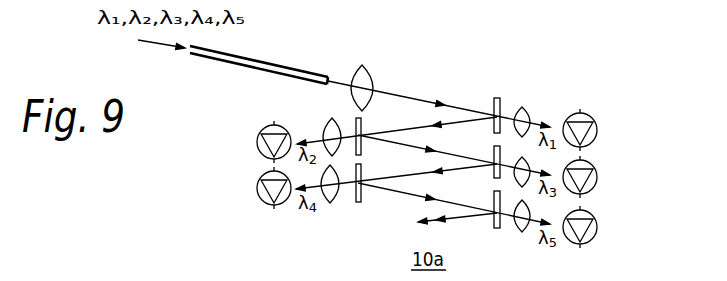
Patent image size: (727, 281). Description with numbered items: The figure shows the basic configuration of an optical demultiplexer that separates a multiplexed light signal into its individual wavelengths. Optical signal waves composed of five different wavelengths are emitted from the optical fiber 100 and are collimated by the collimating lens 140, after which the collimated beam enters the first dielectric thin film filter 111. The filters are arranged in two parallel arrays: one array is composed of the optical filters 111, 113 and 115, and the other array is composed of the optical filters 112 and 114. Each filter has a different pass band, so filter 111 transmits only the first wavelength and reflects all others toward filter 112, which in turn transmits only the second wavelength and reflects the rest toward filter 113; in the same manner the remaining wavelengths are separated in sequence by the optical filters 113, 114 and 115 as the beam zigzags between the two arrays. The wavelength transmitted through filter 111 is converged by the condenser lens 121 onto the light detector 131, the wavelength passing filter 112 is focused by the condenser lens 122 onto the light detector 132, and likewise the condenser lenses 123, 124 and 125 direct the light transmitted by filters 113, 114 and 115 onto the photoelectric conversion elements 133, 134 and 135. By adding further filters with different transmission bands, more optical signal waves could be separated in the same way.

The optical fiber 100 is at (300, 58).
The collimating lens 140 is at (372, 70).
The dielectric thin film filter 111 is at (497, 97).
The dielectric thin film filter 112 is at (356, 118).
The dielectric thin film filter 113 is at (494, 152).
The dielectric thin film filter 114 is at (358, 203).
The dielectric thin film filter 115 is at (497, 229).
The condenser lens 121 is at (522, 106).
The condenser lens 122 is at (328, 121).
The condenser lens 123 is at (516, 185).
The condenser lens 124 is at (330, 204).
The condenser lens 125 is at (522, 233).
The light detector 131 is at (597, 130).
The light detector 132 is at (257, 142).
The light detector 133 is at (597, 177).
The light detector 134 is at (257, 188).
The light detector 135 is at (597, 227).